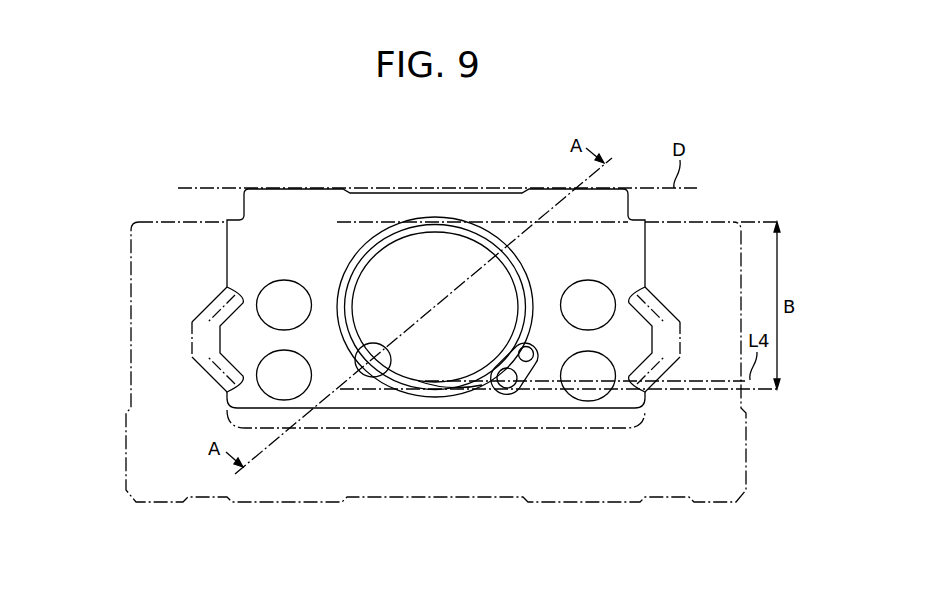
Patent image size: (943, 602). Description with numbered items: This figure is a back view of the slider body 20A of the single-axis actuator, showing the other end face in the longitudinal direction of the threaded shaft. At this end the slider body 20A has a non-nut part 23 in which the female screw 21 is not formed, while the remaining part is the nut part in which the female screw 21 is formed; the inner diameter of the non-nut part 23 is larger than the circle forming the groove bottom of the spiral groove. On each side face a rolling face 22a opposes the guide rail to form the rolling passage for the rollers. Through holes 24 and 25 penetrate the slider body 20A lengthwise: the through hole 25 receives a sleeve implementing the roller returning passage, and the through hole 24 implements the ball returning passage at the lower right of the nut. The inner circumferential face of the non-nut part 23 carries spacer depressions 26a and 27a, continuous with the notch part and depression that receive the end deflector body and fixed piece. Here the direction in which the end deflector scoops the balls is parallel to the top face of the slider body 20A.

The slider body 20A is at (268, 198).
The female screw 21 is at (413, 228).
The rolling face 22a is at (192, 320).
The non-nut part 23 is at (386, 385).
The through hole 24 is at (511, 390).
The through hole 25 is at (280, 283).
The spacer depression 26a is at (494, 392).
The spacer depression 27a is at (528, 365).